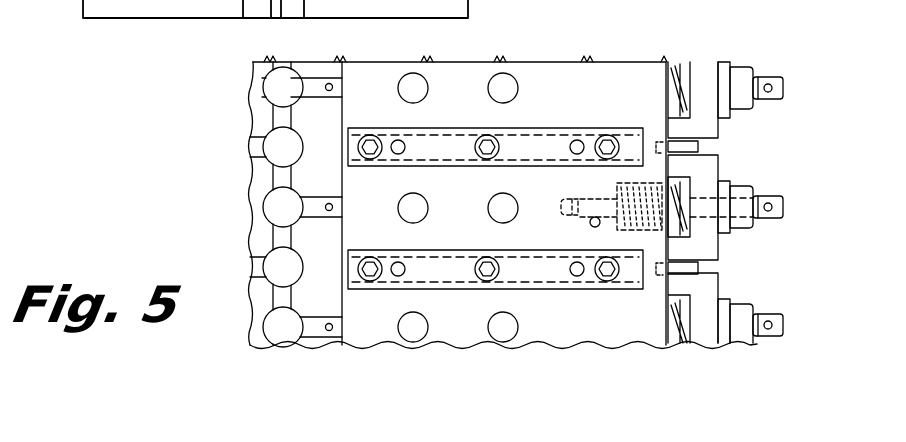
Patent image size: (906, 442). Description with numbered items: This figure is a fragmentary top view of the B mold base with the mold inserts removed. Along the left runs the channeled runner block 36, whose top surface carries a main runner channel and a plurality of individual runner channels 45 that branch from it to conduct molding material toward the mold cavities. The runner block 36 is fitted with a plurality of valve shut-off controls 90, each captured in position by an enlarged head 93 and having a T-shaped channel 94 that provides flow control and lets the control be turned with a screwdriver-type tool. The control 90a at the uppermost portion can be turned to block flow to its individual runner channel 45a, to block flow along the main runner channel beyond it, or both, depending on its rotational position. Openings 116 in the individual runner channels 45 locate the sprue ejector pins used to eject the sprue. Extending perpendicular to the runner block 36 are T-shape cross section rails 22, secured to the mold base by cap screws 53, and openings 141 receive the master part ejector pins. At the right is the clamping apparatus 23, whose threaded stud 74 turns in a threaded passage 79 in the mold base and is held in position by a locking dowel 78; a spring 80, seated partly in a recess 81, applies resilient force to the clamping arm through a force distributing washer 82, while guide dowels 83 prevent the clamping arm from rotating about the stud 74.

The channeled runner block 36 is at (257, 61).
The valve shut-off control 90 is at (272, 163).
The uppermost valve shut-off control 90a is at (268, 98).
The T-shaped channel 94 is at (284, 68).
The enlarged head 93 is at (296, 70).
The individual runner channel 45 is at (318, 218).
The uppermost individual runner channel 45a is at (318, 98).
The opening 116 is at (333, 87).
The opening 141 is at (420, 200).
The rail 22 is at (541, 128).
The cap screw 53 is at (370, 136).
The threaded passage 79 is at (568, 197).
The recess 81 is at (638, 181).
The threaded stud 74 is at (598, 196).
The locking dowel 78 is at (591, 227).
The clamping apparatus 23 is at (724, 56).
The force distributing washer 82 is at (690, 180).
The spring 80 is at (690, 192).
The guide dowel 83 is at (698, 146).